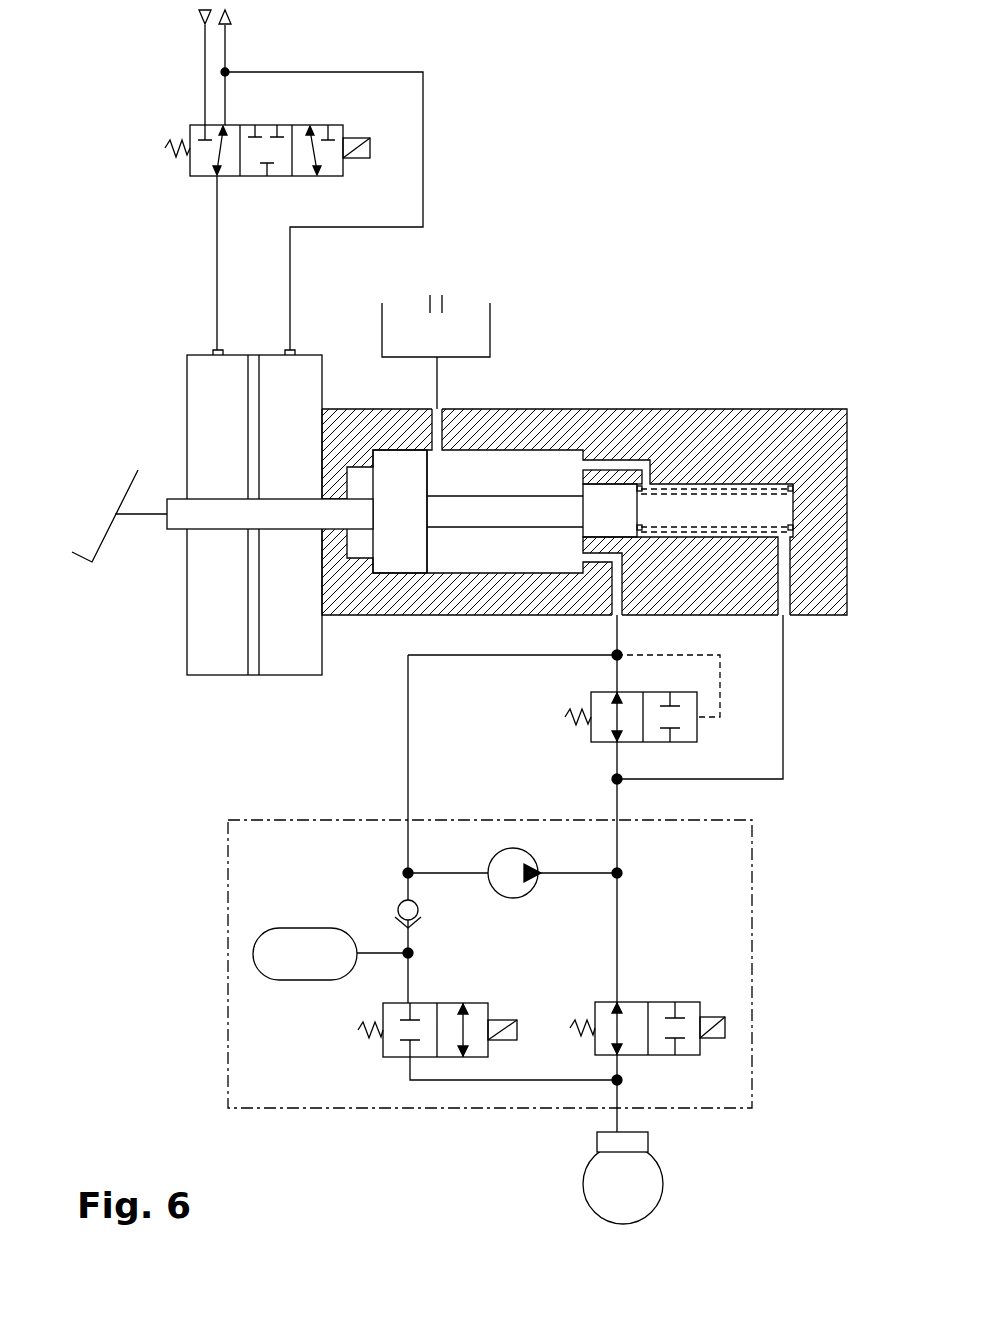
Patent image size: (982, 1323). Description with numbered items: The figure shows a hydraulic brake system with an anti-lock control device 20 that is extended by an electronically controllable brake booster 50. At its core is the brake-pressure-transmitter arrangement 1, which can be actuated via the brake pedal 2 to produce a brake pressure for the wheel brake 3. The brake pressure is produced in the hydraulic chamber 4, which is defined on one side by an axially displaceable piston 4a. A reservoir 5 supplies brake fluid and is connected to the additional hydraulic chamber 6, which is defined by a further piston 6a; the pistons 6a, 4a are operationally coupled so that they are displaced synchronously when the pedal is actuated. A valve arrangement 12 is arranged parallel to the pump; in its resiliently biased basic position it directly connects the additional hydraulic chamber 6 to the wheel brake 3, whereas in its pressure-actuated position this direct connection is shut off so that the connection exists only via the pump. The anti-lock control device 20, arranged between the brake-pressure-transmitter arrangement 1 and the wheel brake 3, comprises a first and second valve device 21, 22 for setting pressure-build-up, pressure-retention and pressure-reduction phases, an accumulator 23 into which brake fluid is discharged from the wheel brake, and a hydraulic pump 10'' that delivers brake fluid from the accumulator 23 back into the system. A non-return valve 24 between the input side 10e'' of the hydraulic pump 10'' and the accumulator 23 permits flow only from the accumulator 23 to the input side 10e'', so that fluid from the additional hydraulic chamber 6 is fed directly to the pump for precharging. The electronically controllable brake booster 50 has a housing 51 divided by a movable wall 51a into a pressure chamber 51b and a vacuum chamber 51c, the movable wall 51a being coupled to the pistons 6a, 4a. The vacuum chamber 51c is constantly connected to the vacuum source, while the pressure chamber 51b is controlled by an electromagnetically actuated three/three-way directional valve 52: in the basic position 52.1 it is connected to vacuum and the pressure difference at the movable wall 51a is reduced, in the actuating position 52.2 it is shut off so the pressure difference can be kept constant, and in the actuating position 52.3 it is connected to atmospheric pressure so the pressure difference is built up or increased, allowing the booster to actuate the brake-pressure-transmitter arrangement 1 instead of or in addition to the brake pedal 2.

The brake-pressure-transmitter arrangement 1 is at (836, 366).
The brake pedal 2 is at (113, 513).
The wheel brake 3 is at (640, 1137).
The hydraulic chamber 4 is at (707, 525).
The piston 4a is at (610, 507).
The reservoir 5 is at (446, 352).
The additional hydraulic chamber 6 is at (497, 487).
The further piston 6a is at (405, 482).
The hydraulic pump 10'' is at (512, 835).
The input side of the hydraulic pump 10e'' is at (450, 821).
The valve arrangement 12 is at (590, 743).
The anti-lock control device 20 is at (750, 821).
The first valve device 21 is at (700, 1002).
The second valve device 22 is at (490, 1003).
The accumulator 23 is at (322, 973).
The non-return valve 24 is at (402, 905).
The electronically controllable brake booster 50 is at (84, 172).
The housing 51 is at (187, 355).
The movable wall 51a is at (253, 373).
The pressure chamber 51b is at (236, 446).
The vacuum chamber 51c is at (306, 446).
The three/three-way directional valve 52 is at (191, 127).
The basic position 52.1 is at (193, 175).
The actuating position 52.2 is at (280, 167).
The actuating position 52.3 is at (360, 197).